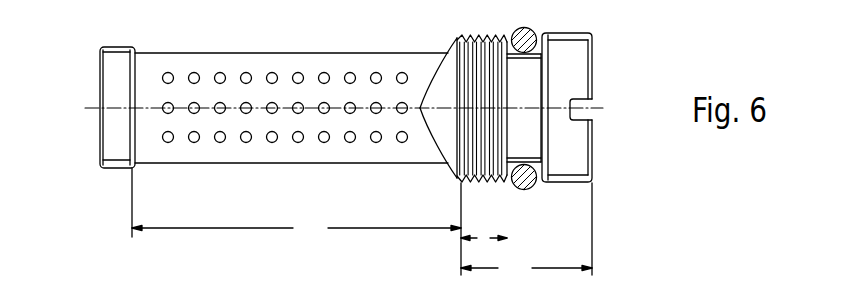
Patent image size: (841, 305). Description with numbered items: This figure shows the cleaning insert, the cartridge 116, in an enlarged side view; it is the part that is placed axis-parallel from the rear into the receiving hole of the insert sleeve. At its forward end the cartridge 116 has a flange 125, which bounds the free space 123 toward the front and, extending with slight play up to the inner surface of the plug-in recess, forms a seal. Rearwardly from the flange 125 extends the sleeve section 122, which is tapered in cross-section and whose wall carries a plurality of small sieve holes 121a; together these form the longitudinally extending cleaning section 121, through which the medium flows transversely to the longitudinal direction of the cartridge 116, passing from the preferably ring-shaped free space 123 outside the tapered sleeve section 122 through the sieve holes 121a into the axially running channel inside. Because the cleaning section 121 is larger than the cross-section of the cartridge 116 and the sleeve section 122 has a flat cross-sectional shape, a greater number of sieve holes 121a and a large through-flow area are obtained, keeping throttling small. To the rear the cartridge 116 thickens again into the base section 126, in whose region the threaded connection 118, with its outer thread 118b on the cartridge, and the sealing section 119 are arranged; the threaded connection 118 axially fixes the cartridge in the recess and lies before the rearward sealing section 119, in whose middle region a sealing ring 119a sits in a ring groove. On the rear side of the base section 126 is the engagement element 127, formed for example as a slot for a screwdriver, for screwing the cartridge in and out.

The cartridge 116 is at (612, 108).
The threaded connection 118 is at (484, 222).
The outer thread 118b is at (460, 183).
The sealing section 119 is at (507, 176).
The sealing ring 119a is at (537, 181).
The cleaning section 121 is at (296, 221).
The sieve holes 121a is at (326, 139).
The sleeve section 122 is at (236, 163).
The free space 123 is at (291, 165).
The flange 125 is at (110, 133).
The base section 126 is at (526, 233).
The engagement element 127 is at (584, 101).